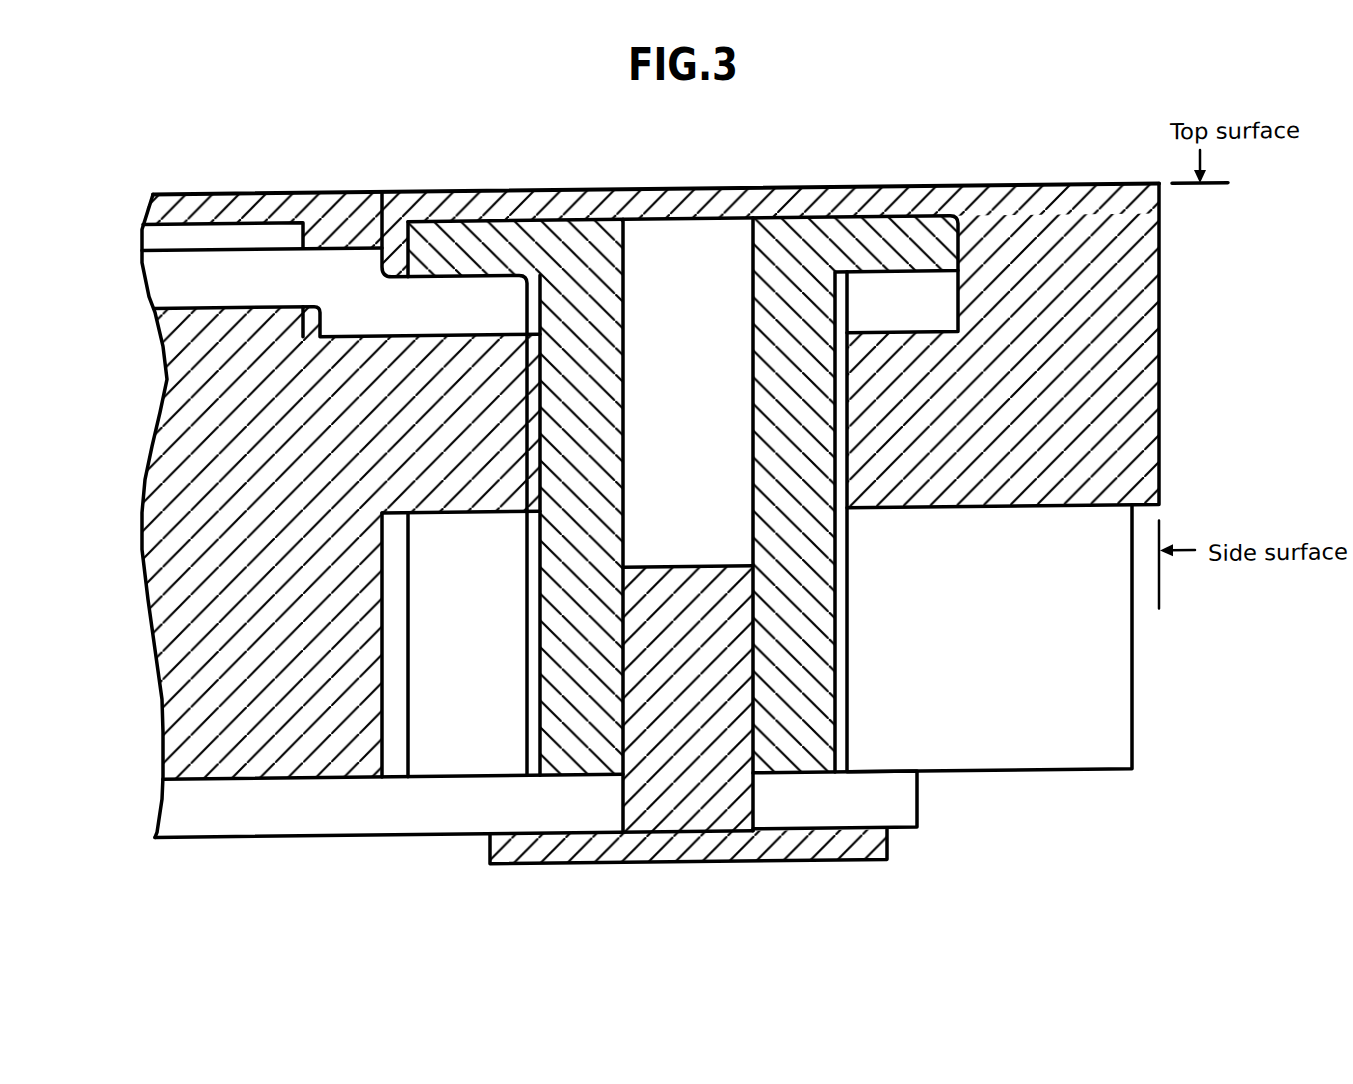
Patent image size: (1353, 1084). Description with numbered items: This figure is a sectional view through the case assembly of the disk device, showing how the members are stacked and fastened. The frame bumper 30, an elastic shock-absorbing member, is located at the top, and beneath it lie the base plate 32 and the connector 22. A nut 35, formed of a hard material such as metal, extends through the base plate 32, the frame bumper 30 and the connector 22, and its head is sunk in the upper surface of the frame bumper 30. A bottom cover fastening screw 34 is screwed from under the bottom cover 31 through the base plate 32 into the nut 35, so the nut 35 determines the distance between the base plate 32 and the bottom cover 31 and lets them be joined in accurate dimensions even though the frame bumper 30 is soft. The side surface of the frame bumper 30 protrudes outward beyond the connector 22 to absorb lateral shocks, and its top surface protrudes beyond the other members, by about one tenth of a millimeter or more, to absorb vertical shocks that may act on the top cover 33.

The frame bumper 30 is at (285, 189).
The nut 35 is at (583, 244).
The top cover 33 is at (142, 239).
The base plate 32 is at (146, 289).
The connector 22 is at (1133, 638).
The bottom cover 31 is at (900, 808).
The bottom cover fastening screw 34 is at (845, 864).